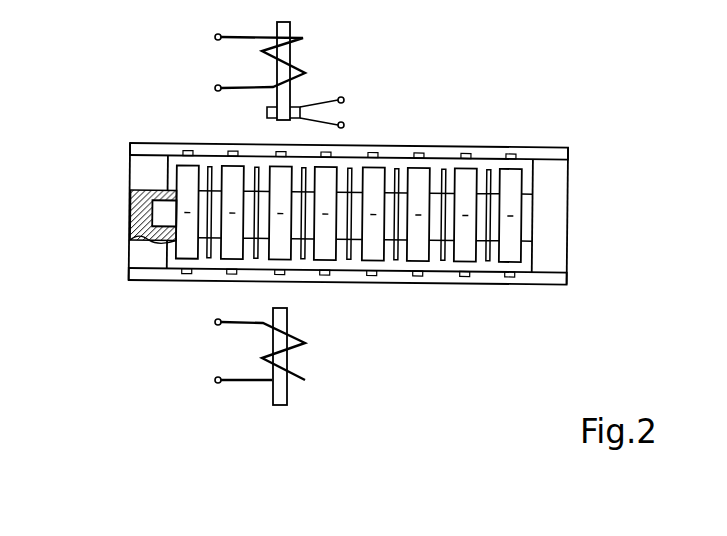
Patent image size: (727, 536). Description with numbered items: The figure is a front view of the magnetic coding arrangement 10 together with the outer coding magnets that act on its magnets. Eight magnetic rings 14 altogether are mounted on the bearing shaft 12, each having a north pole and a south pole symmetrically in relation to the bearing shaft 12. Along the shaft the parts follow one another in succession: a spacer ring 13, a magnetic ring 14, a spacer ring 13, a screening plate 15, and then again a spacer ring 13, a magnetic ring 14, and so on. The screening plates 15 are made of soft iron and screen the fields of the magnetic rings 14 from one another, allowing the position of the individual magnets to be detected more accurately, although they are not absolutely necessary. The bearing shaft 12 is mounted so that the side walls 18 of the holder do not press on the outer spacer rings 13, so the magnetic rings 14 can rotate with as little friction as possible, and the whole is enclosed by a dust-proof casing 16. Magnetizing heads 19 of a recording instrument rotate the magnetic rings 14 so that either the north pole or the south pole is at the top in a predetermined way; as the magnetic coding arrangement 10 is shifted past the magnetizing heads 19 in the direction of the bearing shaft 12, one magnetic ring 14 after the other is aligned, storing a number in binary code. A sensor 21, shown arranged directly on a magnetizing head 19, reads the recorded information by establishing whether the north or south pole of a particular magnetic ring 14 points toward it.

The magnetic coding arrangement 10 is at (351, 189).
The bearing shaft 12 is at (166, 215).
The spacer ring 13 is at (524, 205).
The magnetic ring 14 is at (460, 169).
The screening plate 15 is at (445, 261).
The dust-proof casing 16 is at (153, 152).
The side wall 18 is at (147, 177).
The magnetizing head 19 is at (290, 24).
The sensor 21 is at (267, 113).